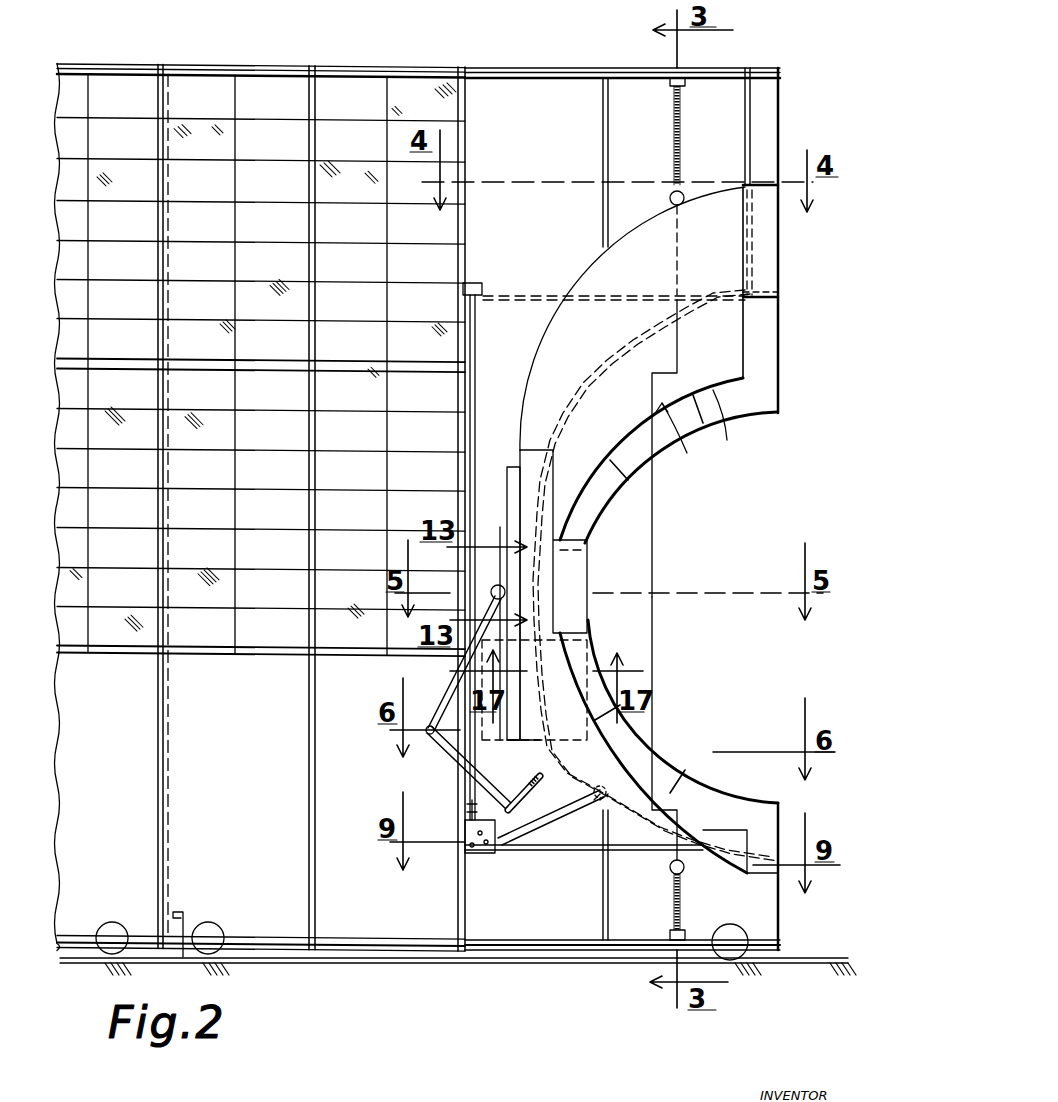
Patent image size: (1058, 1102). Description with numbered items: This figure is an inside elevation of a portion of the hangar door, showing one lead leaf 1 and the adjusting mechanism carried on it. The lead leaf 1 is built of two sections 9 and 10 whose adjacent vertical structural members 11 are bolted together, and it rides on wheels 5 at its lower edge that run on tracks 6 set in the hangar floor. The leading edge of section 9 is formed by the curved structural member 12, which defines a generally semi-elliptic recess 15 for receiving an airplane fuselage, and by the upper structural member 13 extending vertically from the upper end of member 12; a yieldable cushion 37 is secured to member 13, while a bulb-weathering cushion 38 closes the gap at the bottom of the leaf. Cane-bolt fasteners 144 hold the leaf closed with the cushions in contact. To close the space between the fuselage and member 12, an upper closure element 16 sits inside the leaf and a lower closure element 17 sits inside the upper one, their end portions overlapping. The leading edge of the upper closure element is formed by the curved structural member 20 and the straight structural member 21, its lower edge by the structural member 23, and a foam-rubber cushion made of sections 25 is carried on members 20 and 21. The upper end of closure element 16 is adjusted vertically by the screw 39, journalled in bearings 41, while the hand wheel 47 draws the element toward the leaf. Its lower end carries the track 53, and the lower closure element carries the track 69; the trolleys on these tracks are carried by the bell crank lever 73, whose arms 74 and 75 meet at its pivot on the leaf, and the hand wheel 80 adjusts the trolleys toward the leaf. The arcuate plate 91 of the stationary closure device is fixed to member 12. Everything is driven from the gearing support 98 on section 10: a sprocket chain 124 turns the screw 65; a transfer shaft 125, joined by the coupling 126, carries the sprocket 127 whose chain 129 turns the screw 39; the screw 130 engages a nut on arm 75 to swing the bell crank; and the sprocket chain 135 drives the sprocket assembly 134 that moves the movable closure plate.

The lead leaf 1 is at (506, 70).
The wheels 5 is at (106, 915).
The tracks 6 is at (820, 962).
The section 9 is at (565, 84).
The section 10 is at (335, 76).
The vertical structural members 11 is at (468, 905).
The curved structural member 12 is at (640, 335).
The upper structural member 13 is at (752, 155).
The semi-elliptic recess 15 is at (790, 448).
The upper closure element 16 is at (684, 434).
The lower closure element 17 is at (672, 790).
The curved structural member 20 is at (705, 813).
The straight structural member 21 is at (745, 335).
The structural member 23 is at (552, 450).
The cushion sections 25 is at (773, 270).
The cushions 37 is at (772, 120).
The cushions 38 is at (775, 936).
The screw 39 is at (683, 128).
The bearings 41 is at (668, 84).
The hand wheel 47 is at (670, 198).
The track 53 is at (510, 482).
The screw 65 is at (684, 900).
The track 69 is at (512, 738).
The bell crank lever 73 is at (452, 686).
The arm 74 is at (460, 670).
The lower arm 75 is at (448, 750).
The hand wheel 80 is at (491, 590).
The arcuate plate 91 is at (665, 865).
The gearing support 98 is at (462, 828).
The sprocket chain 124 is at (540, 853).
The transfer shaft 125 is at (468, 468).
The coupling 126 is at (465, 806).
The chain sprocket 127 is at (485, 292).
The chain 129 is at (590, 296).
The screw 130 is at (535, 782).
The sprocket assembly 134 is at (604, 800).
The sprocket chain 135 is at (565, 815).
The fasteners 144 is at (180, 912).